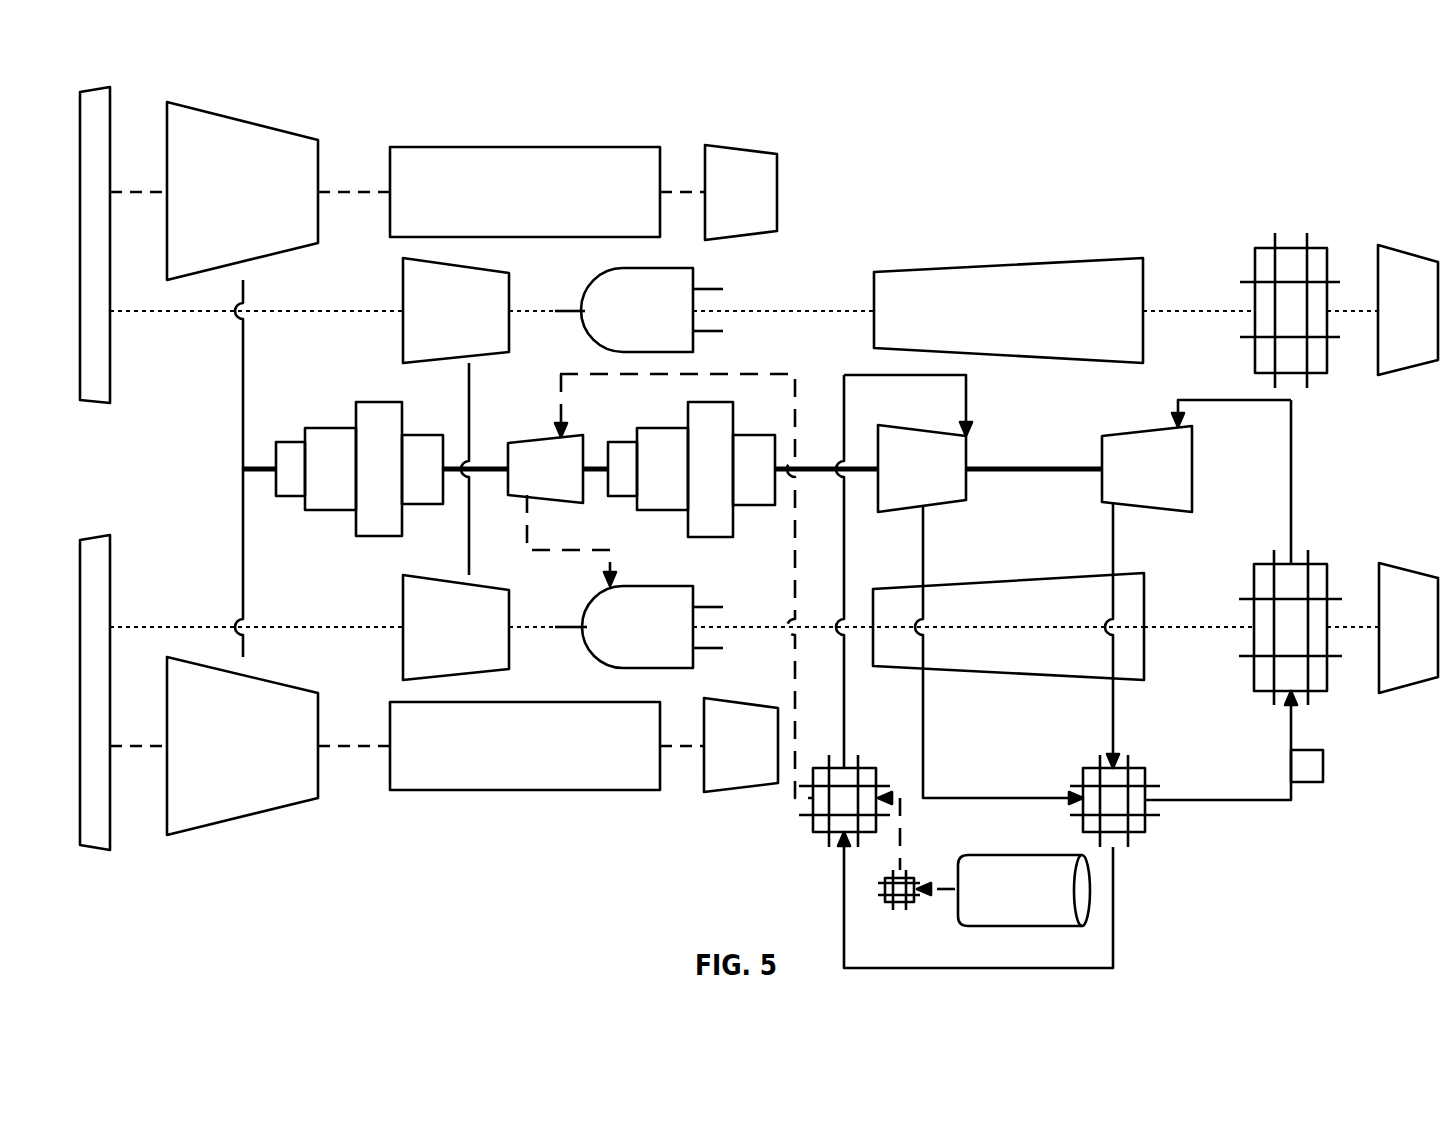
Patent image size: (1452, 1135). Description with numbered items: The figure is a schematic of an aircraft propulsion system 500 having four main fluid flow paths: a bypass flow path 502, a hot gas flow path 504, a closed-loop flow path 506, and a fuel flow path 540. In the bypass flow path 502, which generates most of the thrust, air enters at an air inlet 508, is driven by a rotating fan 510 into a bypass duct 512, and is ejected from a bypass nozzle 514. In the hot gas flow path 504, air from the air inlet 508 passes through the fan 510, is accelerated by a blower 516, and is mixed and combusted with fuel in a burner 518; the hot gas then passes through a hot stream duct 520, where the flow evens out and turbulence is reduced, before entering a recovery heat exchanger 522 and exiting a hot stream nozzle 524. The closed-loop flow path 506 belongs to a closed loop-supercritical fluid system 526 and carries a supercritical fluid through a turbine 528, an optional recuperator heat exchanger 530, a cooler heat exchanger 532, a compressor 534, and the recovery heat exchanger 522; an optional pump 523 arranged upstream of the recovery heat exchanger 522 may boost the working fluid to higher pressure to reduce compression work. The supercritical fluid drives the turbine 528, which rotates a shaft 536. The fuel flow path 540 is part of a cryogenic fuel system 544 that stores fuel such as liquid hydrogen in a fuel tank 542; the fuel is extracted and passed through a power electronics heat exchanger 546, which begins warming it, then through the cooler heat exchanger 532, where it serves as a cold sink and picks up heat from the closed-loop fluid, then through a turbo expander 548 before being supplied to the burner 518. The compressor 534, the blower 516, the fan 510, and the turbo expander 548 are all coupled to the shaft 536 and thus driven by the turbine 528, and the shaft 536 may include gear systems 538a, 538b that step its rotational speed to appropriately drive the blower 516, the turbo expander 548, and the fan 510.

The aircraft propulsion system 500 is at (160, 84).
The bypass flow path 502 is at (340, 190).
The hot gas flow path 504 is at (207, 312).
The closed-loop flow path 506 is at (1197, 802).
The air inlet 508 is at (112, 378).
The fan 510 is at (255, 137).
The bypass duct 512 is at (487, 146).
The bypass nozzle 514 is at (750, 168).
The blower 516 is at (412, 293).
The burner 518 is at (598, 287).
The hot stream duct 520 is at (1117, 268).
The recovery heat exchanger 522 is at (1318, 375).
The pump 523 is at (1312, 783).
The hot stream nozzle 524 is at (1388, 262).
The closed loop-supercritical fluid system 526 is at (1266, 908).
The turbine 528 is at (1177, 453).
The recuperator heat exchanger 530 is at (1140, 835).
The cooler heat exchanger 532 is at (815, 835).
The compressor 534 is at (955, 452).
The shaft 536 is at (483, 472).
The gear system 538a is at (727, 402).
The gear system 538b is at (370, 408).
The fuel flow path 540 is at (900, 845).
The fuel tank 542 is at (1055, 885).
The cryogenic fuel system 544 is at (1012, 933).
The power electronics heat exchanger 546 is at (898, 905).
The turbo expander 548 is at (548, 450).